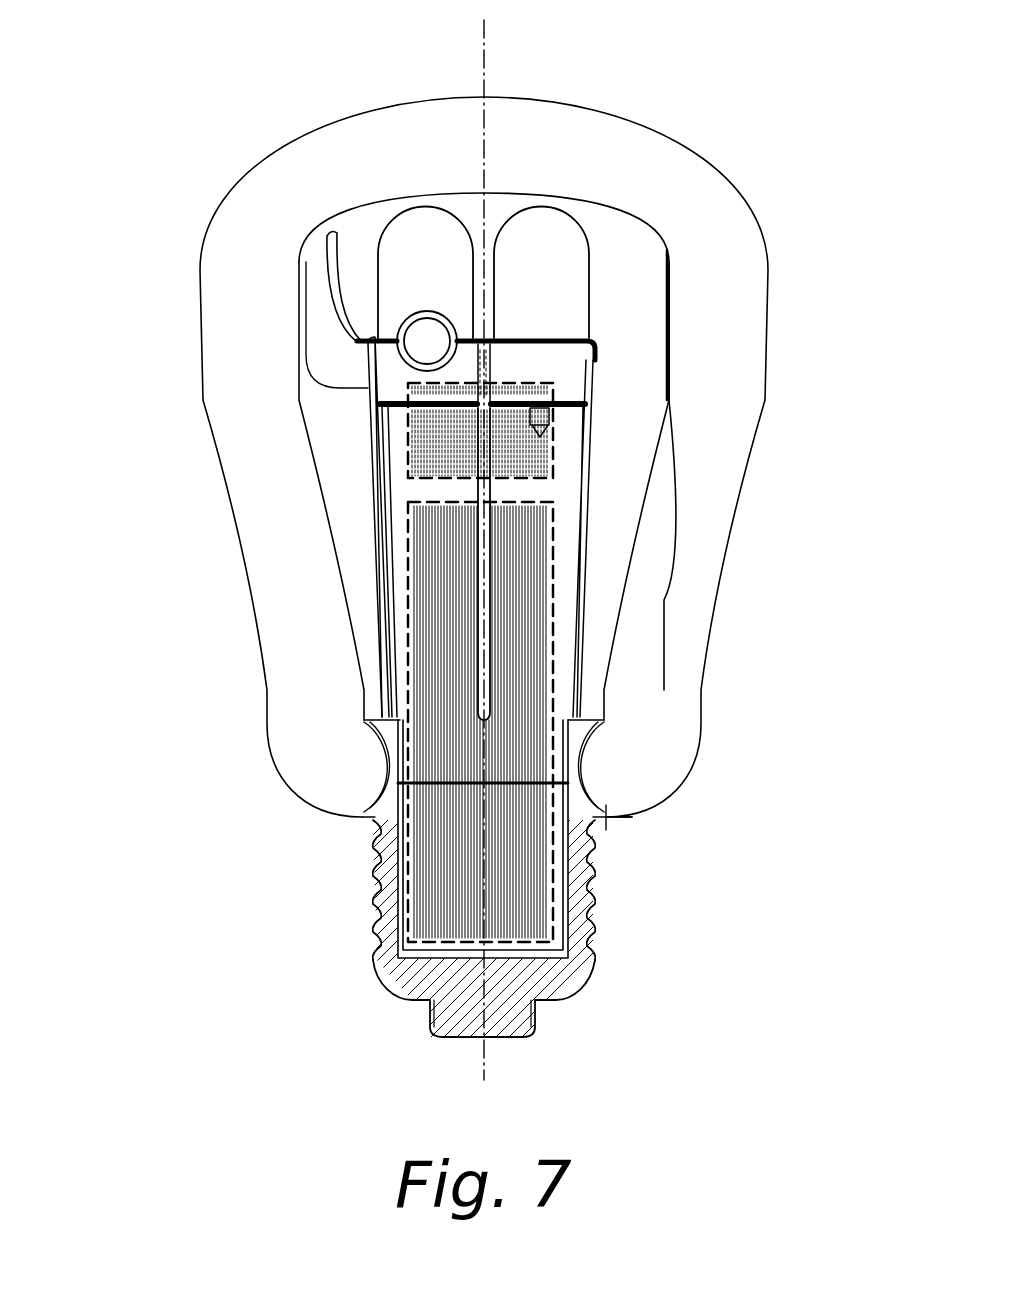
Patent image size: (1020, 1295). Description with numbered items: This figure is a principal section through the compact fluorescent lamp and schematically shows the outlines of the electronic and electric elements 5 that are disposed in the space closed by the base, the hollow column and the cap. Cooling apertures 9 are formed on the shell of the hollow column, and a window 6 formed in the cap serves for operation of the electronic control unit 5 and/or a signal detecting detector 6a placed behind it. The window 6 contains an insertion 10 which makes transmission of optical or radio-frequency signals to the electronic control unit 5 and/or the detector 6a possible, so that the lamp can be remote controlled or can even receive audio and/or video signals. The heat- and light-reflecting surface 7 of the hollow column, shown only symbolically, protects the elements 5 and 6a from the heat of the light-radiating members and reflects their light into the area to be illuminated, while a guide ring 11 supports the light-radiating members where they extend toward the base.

The electronic control unit 5 is at (518, 740).
The window 6 is at (513, 337).
The signal detecting detector 6a is at (527, 448).
The heat- and light-reflecting surface 7 is at (600, 373).
The cooling apertures 9 is at (483, 492).
The insertion 10 is at (484, 338).
The guide ring 11 is at (363, 820).